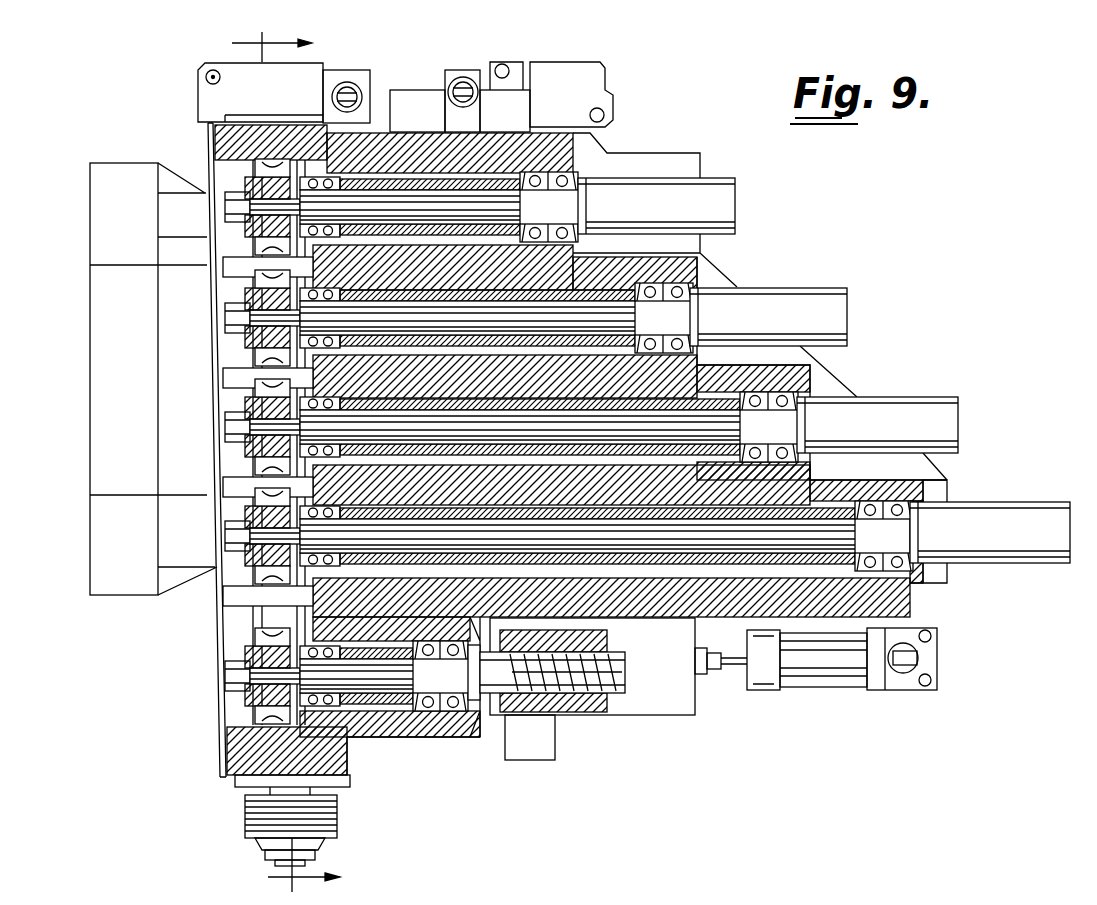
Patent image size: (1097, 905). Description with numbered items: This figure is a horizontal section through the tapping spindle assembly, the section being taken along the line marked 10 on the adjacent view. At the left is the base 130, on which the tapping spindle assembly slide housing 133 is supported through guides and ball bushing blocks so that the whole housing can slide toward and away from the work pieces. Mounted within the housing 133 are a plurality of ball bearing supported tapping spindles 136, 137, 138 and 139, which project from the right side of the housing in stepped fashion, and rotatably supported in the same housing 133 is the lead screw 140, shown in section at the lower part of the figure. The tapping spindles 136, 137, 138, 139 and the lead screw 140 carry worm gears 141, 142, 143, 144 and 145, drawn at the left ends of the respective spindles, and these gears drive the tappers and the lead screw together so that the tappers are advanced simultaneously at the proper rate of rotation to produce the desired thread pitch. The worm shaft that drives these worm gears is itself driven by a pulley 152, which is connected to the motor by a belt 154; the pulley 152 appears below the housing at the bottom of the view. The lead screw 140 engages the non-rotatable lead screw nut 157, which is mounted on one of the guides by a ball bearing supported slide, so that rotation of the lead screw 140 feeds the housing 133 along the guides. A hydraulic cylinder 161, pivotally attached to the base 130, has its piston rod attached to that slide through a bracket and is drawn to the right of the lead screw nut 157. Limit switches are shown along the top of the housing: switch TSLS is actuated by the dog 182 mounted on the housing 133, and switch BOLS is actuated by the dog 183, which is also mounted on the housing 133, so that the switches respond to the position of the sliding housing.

The section line 10— 10 is at (304, 459).
The base 130 is at (108, 360).
The tapping spindle assembly slide housing 133 is at (216, 411).
The tapping spindle 136 is at (1027, 520).
The tapping spindle 137 is at (973, 360).
The tapping spindle 138 is at (827, 303).
The tapping spindle 139 is at (722, 193).
The lead screw 140 is at (613, 693).
The worm gear 141 is at (258, 561).
The worm gear 142 is at (258, 451).
The worm gear 143 is at (237, 352).
The worm gear 144 is at (218, 229).
The worm gear 145 is at (265, 703).
The pulley 152 is at (330, 807).
The belt 154 is at (243, 815).
The lead screw nut 157 is at (570, 715).
The hydraulic cylinder 161 is at (827, 677).
The dog 182 is at (508, 97).
The dog 183 is at (410, 95).
The switch BOLS is at (205, 97).
The switch TSLS is at (613, 96).